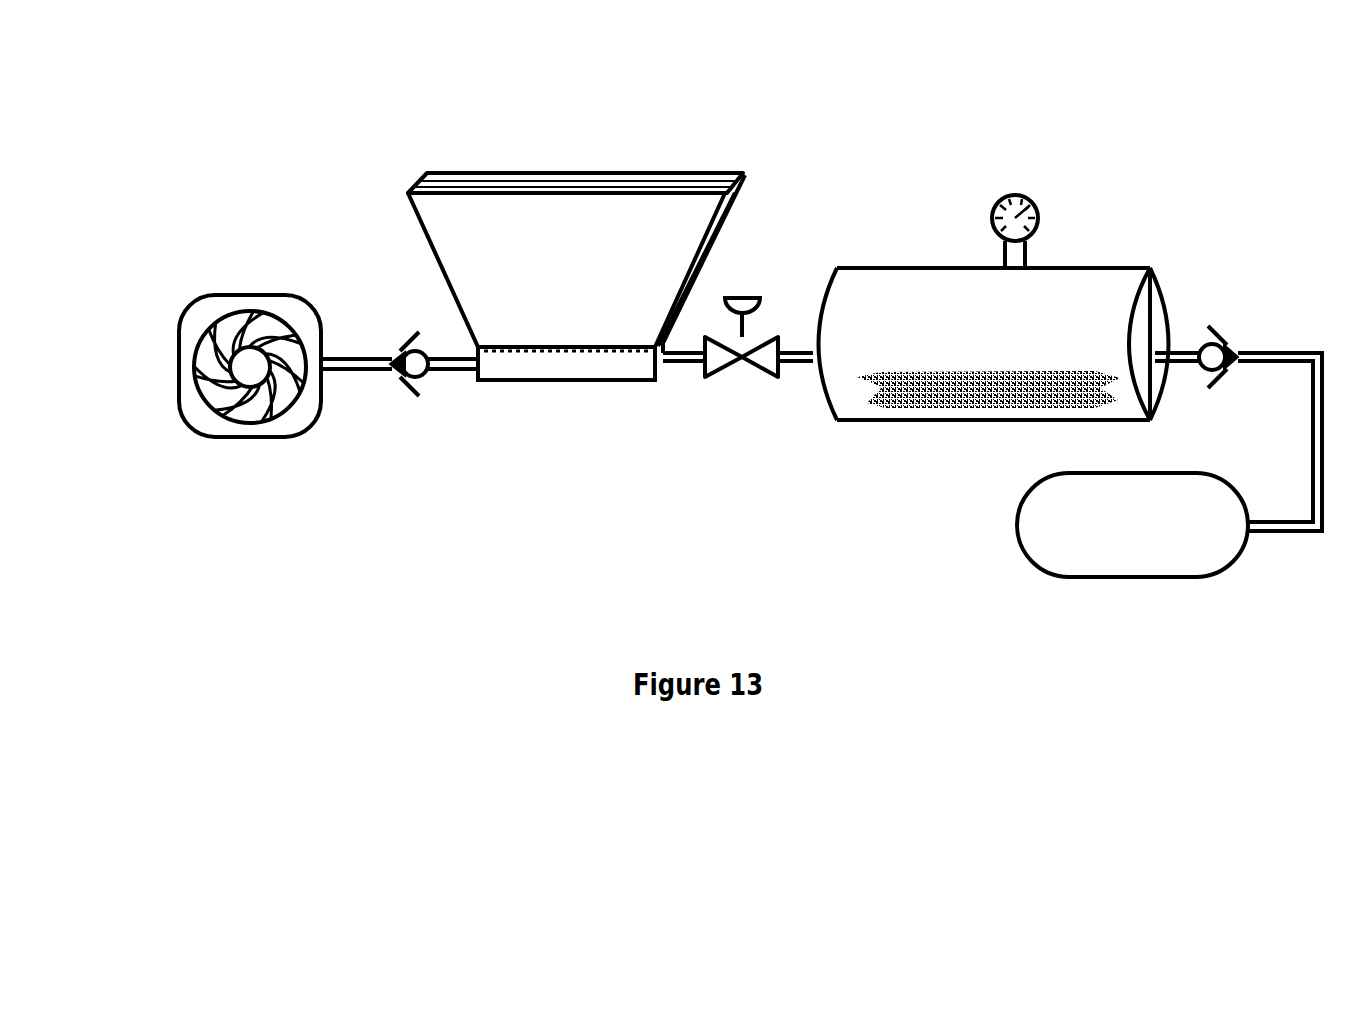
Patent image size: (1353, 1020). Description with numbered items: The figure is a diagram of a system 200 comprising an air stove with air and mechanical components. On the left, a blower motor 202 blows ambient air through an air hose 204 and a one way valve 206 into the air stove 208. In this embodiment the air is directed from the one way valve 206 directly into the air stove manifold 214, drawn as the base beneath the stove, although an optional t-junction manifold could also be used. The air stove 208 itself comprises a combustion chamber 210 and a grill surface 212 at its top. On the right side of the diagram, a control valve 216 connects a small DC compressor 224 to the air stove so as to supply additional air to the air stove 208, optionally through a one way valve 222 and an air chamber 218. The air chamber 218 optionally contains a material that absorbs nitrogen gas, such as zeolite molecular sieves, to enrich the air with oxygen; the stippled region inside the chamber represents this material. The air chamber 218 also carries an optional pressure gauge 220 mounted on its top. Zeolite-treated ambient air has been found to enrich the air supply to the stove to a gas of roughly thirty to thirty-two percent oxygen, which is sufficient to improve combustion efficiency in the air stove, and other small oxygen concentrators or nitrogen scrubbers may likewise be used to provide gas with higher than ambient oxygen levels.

The system 200 is at (850, 114).
The blower motor 202 is at (262, 440).
The air hose 204 is at (347, 356).
The one way valve 206 is at (410, 392).
The air stove 208 is at (408, 208).
The combustion chamber 210 is at (549, 278).
The grill surface 212 is at (608, 178).
The air stove manifold 214 is at (505, 368).
The control valve 216 is at (760, 367).
The air chamber 218 is at (875, 264).
The pressure gauge 220 is at (1015, 193).
The one way valve 222 is at (1223, 338).
The small DC compressor 224 is at (1027, 557).